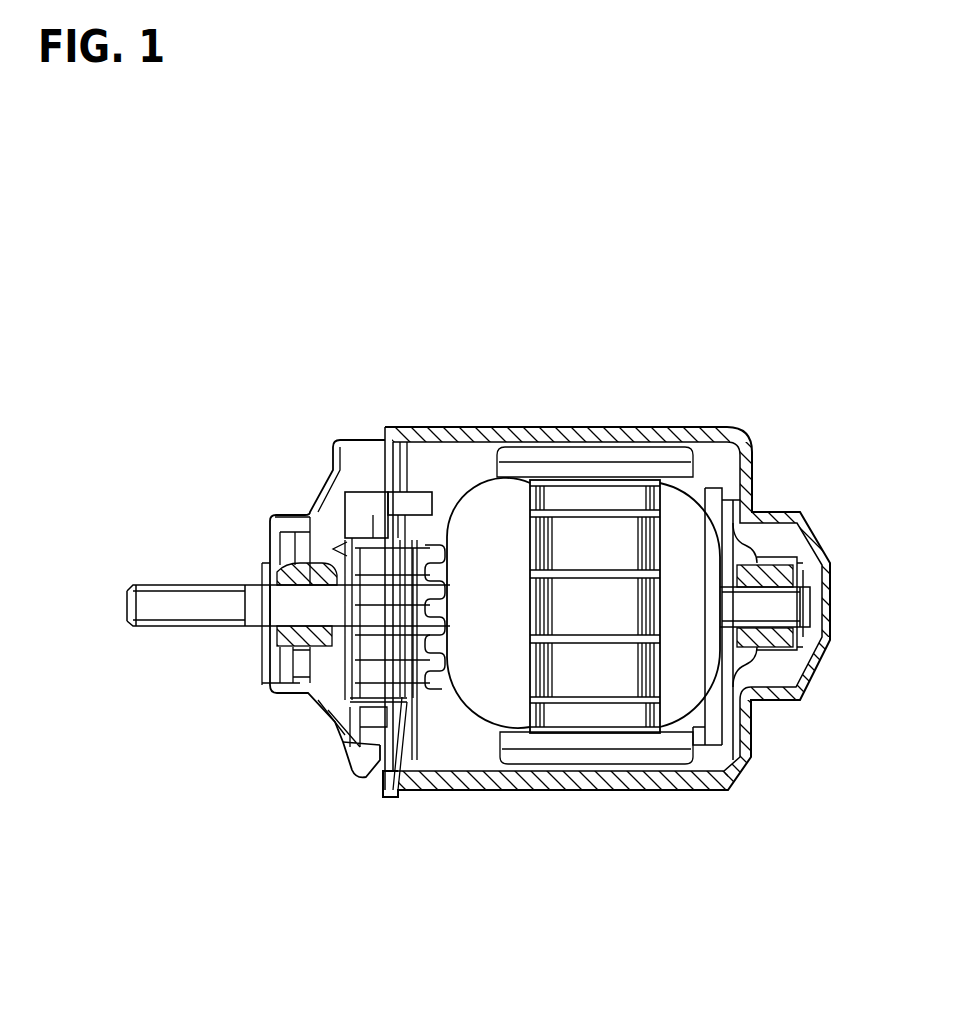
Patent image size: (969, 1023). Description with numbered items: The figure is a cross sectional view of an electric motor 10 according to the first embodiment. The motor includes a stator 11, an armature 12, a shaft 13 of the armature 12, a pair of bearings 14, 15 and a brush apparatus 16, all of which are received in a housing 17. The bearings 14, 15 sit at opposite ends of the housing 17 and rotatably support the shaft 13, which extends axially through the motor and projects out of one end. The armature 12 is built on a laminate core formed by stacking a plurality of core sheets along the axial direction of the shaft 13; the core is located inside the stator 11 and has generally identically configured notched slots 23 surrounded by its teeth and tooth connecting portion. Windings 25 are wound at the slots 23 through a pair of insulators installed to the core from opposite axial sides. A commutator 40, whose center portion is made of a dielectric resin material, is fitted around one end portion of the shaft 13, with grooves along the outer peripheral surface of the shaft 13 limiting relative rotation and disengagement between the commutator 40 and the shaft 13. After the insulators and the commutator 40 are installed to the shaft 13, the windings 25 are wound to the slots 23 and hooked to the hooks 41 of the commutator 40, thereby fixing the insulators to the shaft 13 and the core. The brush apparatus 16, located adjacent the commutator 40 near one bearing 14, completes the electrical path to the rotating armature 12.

The electric motor 10 is at (549, 353).
The stator 11 is at (668, 455).
The armature 12 is at (473, 486).
The shaft 13 is at (288, 600).
The bearing 14 is at (282, 695).
The bearing 15 is at (768, 647).
The brush apparatus 16 is at (370, 502).
The housing 17 is at (638, 427).
The slots 23 is at (602, 698).
The windings 25 is at (490, 700).
The commutator 40 is at (330, 705).
The hooks 41 is at (382, 790).